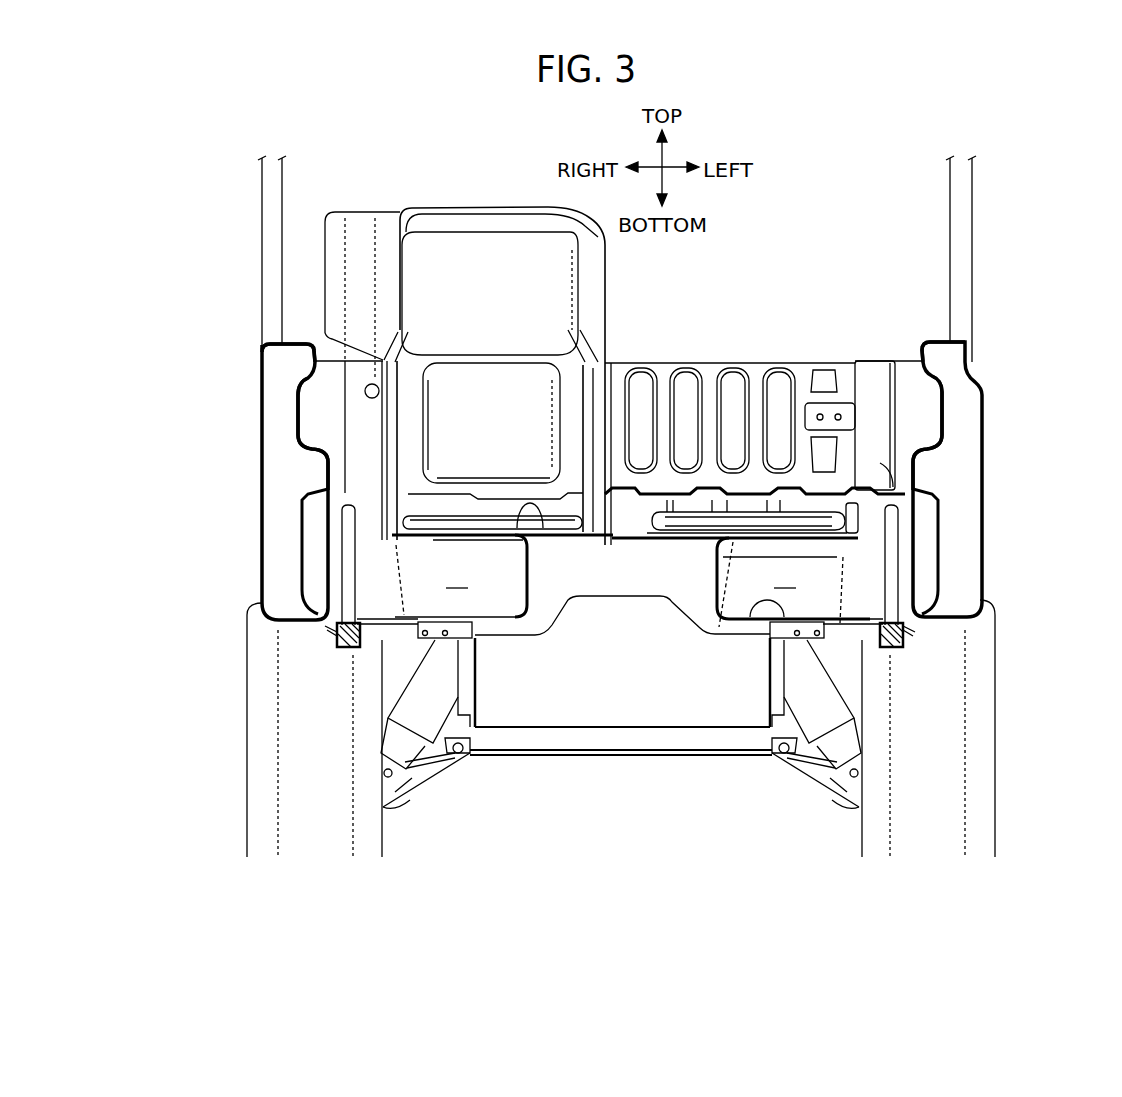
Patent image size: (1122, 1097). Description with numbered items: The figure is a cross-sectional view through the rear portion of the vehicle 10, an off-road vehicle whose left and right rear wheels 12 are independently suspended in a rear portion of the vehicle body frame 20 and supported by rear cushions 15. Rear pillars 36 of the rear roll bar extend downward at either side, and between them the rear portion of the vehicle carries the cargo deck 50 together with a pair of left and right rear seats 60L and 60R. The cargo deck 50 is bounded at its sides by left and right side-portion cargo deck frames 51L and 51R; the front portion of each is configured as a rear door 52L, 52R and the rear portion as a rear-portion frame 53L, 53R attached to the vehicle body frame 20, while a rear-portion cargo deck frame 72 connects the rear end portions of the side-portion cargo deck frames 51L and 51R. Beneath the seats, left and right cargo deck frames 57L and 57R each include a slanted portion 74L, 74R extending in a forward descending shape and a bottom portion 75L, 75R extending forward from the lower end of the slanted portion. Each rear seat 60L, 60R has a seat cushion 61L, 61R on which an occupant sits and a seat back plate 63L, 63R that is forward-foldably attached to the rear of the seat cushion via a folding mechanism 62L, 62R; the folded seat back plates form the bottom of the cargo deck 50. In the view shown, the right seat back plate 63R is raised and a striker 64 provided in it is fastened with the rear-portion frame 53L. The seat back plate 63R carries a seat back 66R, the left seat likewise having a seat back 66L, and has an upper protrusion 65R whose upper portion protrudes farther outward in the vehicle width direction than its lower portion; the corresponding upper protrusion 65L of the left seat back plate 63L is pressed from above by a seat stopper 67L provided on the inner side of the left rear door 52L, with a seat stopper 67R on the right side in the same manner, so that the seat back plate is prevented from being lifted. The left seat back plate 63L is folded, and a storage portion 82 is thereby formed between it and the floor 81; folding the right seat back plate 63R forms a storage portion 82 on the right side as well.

The vehicle 10 is at (162, 187).
The rear wheel 12 is at (246, 733).
The rear cushion 15 is at (442, 738).
The vehicle body frame 20 is at (976, 181).
The rear pillar 36 is at (261, 203).
The cargo deck 50 is at (733, 298).
The right side-portion cargo deck frame 51R is at (294, 338).
The left side-portion cargo deck frame 51L is at (931, 340).
The right rear door 52R is at (260, 470).
The left rear door 52L is at (984, 444).
The right rear-portion frame 53R is at (323, 352).
The left rear-portion frame 53L is at (904, 358).
The right cargo deck frame 57R is at (340, 560).
The left cargo deck frame 57L is at (900, 525).
The right rear seat 60R is at (437, 206).
The left rear seat 60L is at (736, 540).
The right seat cushion 61R is at (547, 532).
The left seat cushion 61L is at (645, 535).
The right folding mechanism 62R is at (340, 512).
The left folding mechanism 62L is at (862, 520).
The right seat back plate 63R is at (607, 252).
The left seat back plate 63L is at (713, 437).
The striker 64 is at (364, 392).
The right upper protrusion 65R is at (323, 244).
The left upper protrusion 65L is at (897, 443).
The right seat back 66R is at (478, 258).
The left seat back 66L is at (770, 540).
The right seat stopper 67R is at (318, 440).
The left seat stopper 67L is at (905, 455).
The rear-portion cargo deck frame 72 is at (767, 362).
The right slanted portion 74R is at (312, 598).
The left slanted portion 74L is at (906, 548).
The right bottom portion 75R is at (334, 626).
The left bottom portion 75L is at (899, 608).
The floor 81 is at (744, 740).
The storage portion 82 is at (632, 581).